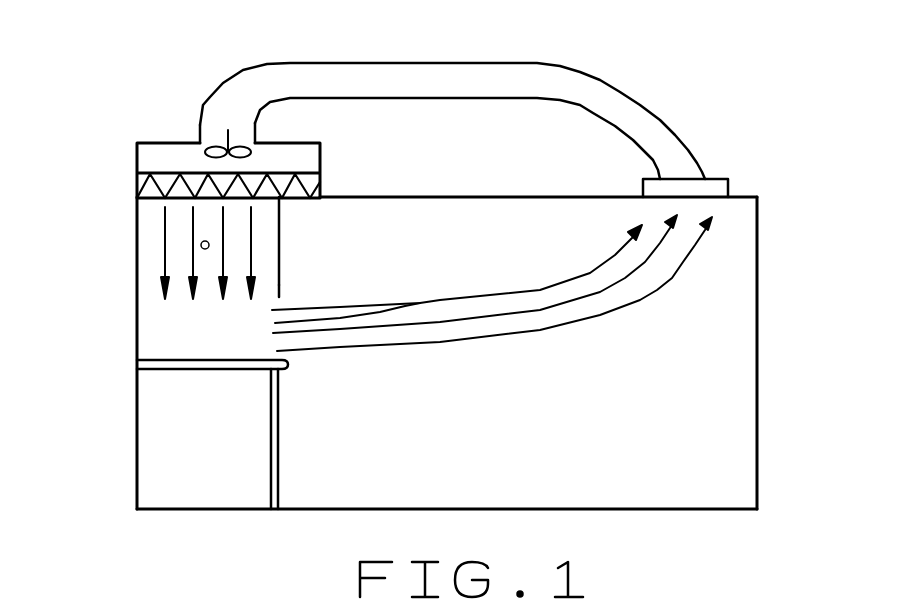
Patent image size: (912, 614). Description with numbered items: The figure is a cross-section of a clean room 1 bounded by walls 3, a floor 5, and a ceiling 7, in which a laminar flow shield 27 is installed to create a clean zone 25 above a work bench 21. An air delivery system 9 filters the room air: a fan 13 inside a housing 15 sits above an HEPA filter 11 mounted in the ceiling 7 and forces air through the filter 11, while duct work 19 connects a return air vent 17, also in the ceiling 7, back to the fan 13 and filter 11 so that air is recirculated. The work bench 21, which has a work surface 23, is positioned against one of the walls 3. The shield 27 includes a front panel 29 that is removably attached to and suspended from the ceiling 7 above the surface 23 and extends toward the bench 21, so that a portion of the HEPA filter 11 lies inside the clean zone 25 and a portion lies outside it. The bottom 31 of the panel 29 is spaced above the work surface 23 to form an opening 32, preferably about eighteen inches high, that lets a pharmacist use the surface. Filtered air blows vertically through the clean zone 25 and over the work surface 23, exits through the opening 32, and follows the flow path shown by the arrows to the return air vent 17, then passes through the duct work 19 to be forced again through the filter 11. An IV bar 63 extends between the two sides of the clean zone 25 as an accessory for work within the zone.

The clean room 1 is at (800, 221).
The walls 3 is at (137, 307).
The floor 5 is at (630, 508).
The ceiling 7 is at (435, 197).
The air delivery system 9 is at (639, 52).
The HEPA filter 11 is at (137, 183).
The fan 13 is at (203, 151).
The housing 15 is at (320, 157).
The return air vent 17 is at (717, 179).
The duct work 19 is at (467, 63).
The work bench 21 is at (308, 389).
The work surface 23 is at (167, 360).
The clean zone 25 is at (140, 248).
The shield 27 is at (310, 222).
The front panel 29 is at (279, 268).
The bottom 31 is at (279, 297).
The opening 32 is at (415, 304).
The IV bar 63 is at (201, 242).